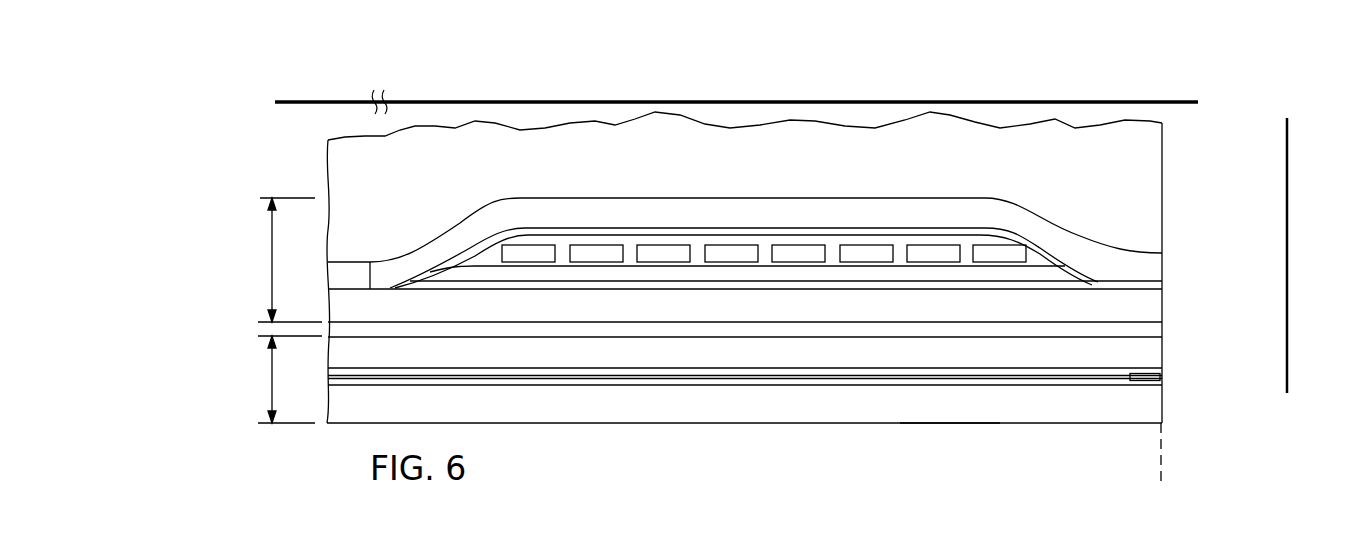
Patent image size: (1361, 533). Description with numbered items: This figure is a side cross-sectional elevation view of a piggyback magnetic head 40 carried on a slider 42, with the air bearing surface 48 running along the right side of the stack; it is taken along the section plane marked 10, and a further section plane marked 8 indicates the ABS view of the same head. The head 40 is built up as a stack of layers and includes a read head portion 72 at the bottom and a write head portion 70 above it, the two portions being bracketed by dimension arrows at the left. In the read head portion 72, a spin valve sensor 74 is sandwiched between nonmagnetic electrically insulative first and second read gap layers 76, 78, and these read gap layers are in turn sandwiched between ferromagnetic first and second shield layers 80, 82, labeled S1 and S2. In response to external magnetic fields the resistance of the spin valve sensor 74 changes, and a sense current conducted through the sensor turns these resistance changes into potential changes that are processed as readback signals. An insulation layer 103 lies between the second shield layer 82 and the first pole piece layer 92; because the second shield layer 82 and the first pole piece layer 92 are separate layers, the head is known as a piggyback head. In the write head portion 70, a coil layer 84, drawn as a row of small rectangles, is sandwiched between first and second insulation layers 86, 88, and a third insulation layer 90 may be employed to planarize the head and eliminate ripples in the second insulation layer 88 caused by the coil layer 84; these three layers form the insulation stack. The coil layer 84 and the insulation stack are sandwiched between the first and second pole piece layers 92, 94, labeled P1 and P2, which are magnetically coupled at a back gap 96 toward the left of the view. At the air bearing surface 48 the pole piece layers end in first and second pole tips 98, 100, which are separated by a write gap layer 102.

The section line 8- 8 is at (1288, 383).
The section line 10- 10 is at (1188, 102).
The magnetic head 40 is at (310, 153).
The slider 42 is at (1145, 157).
The air bearing surface 48 is at (1161, 480).
The write head portion 70 is at (272, 265).
The read head portion 72 is at (272, 383).
The spin valve sensor 74 is at (1162, 377).
The first read gap layer 76 is at (815, 385).
The second read gap layer 78 is at (782, 367).
The first shield layer 80 is at (920, 410).
The second shield layer 82 is at (1028, 357).
The coil layer 84 is at (795, 250).
The first insulation layer 86 is at (703, 273).
The second insulation layer 88 is at (1045, 257).
The third insulation layer 90 is at (568, 228).
The first pole piece layer 92 is at (1077, 310).
The second pole piece layer 94 is at (938, 210).
The back gap 96 is at (371, 262).
The first pole tip 98 is at (1162, 310).
The second pole tip 100 is at (1152, 262).
The write gap layer 102 is at (1162, 284).
The insulation layer 103 is at (980, 332).